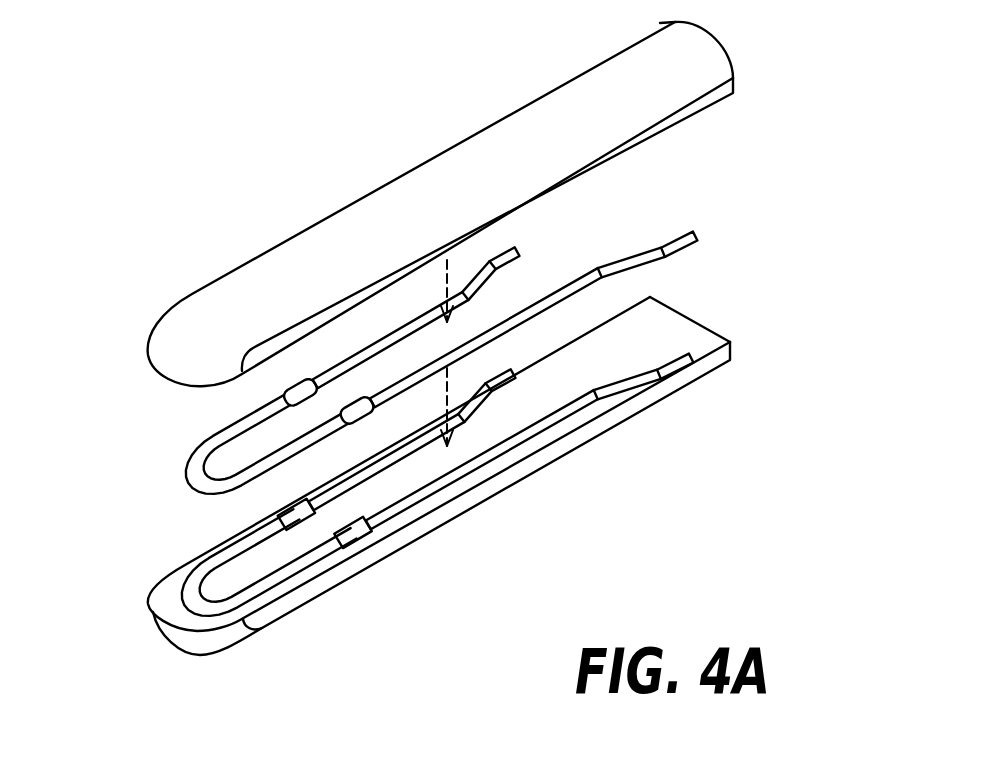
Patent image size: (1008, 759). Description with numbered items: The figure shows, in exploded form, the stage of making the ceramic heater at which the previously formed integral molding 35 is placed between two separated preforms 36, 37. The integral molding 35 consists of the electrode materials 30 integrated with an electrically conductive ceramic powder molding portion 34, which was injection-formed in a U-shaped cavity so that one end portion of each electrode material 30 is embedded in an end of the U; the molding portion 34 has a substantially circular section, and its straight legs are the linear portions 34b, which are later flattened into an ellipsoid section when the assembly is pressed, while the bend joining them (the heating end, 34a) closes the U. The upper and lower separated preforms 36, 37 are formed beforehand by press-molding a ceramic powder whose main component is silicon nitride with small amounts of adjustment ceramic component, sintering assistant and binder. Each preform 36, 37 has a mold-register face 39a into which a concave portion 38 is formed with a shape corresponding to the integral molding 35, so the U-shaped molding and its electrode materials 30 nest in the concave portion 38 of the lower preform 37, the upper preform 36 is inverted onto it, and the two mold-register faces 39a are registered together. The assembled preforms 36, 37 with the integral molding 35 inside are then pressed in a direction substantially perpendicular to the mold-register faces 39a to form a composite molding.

The electrode material 30 is at (518, 250).
The electrically conductive ceramic powder molding portion 34 is at (318, 508).
The heating portion 34a is at (205, 480).
The linear portion 34b is at (265, 408).
The integral molding 35 is at (413, 408).
The separated preform 36 is at (457, 167).
The separated preform 37 is at (439, 486).
The concave portion 38 is at (300, 568).
The mold-register face 39a is at (694, 118).